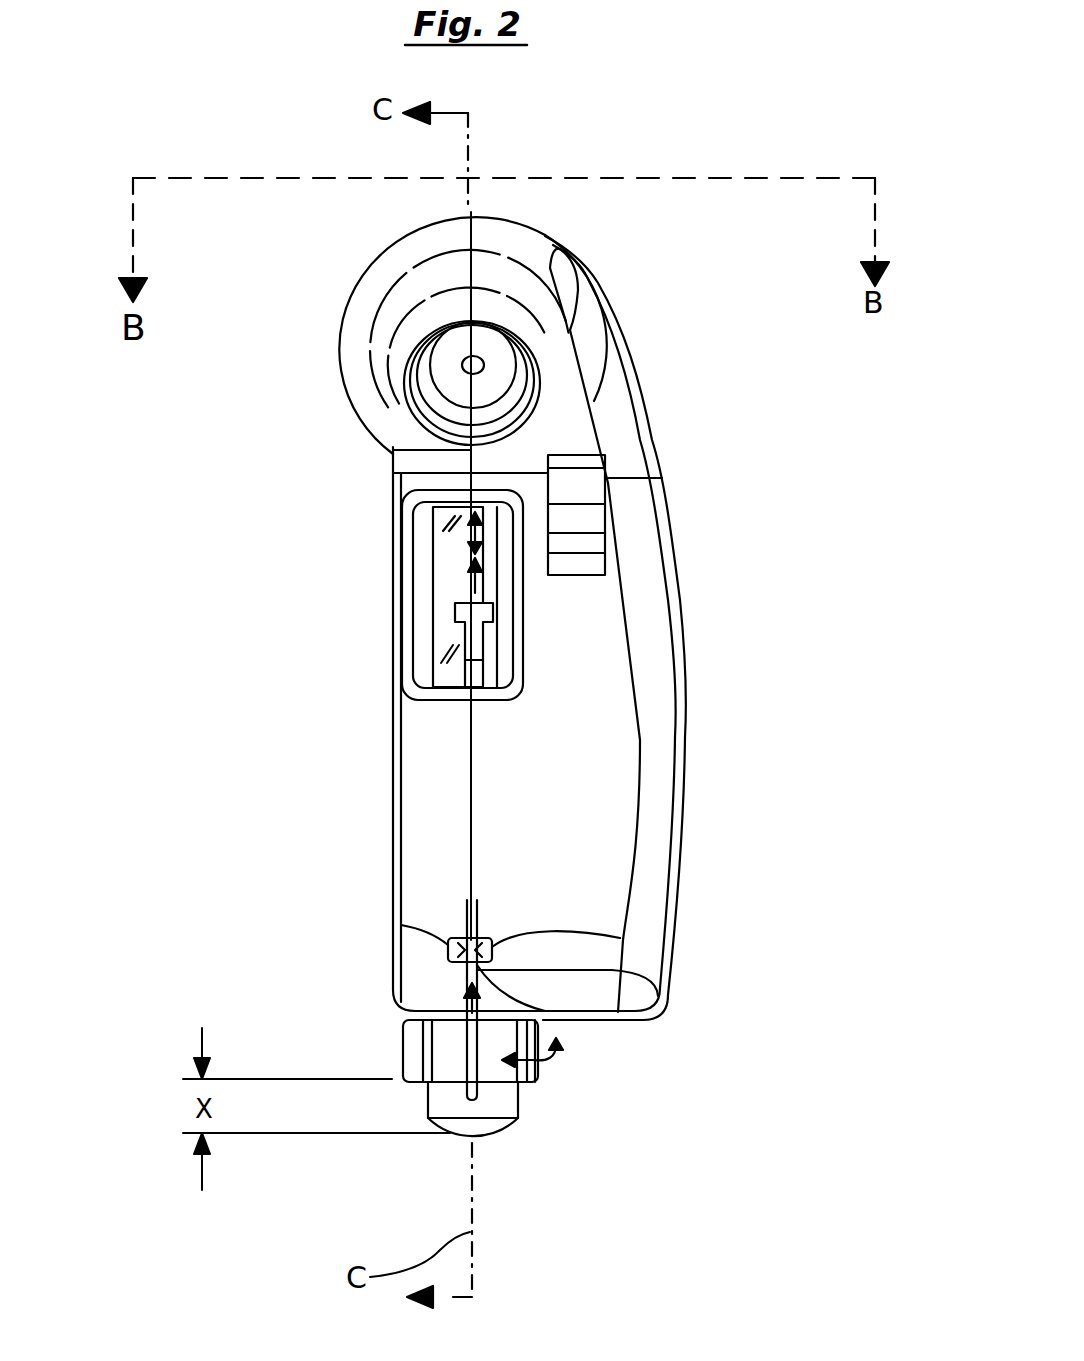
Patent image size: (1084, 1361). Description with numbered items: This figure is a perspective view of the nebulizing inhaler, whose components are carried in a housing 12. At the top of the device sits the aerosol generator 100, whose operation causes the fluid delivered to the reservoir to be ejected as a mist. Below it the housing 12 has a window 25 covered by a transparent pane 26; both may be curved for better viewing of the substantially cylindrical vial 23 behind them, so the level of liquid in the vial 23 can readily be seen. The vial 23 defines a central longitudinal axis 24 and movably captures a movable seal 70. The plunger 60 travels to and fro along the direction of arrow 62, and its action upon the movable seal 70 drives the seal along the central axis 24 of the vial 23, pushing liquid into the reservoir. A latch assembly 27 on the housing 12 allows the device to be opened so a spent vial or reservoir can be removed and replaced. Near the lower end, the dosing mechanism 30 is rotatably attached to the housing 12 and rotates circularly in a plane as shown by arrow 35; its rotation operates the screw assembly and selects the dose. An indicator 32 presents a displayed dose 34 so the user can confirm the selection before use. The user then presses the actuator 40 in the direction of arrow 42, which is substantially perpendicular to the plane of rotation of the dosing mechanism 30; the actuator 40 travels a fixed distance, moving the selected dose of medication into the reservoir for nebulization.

The housing 12 is at (587, 800).
The aerosol generator 100 is at (490, 367).
The transparent pane 26 is at (440, 535).
The window 25 is at (448, 587).
The vial 23 is at (437, 665).
The central longitudinal axis 24 is at (468, 534).
The arrow 62 is at (462, 575).
The movable seal 70 is at (492, 601).
The plunger 60 is at (480, 650).
The latch assembly 27 is at (605, 542).
The indicator 32 is at (448, 942).
The displayed dose 34 is at (620, 938).
The arrow 42 is at (460, 995).
The dosing mechanism 30 is at (450, 1048).
The arrow 35 is at (560, 1054).
The actuator 40 is at (503, 1098).